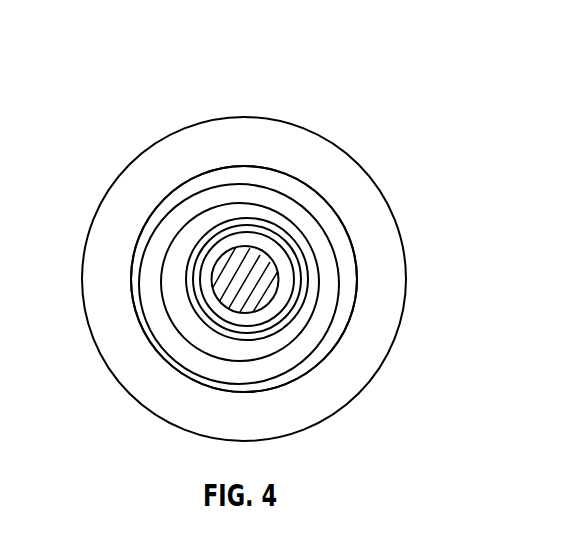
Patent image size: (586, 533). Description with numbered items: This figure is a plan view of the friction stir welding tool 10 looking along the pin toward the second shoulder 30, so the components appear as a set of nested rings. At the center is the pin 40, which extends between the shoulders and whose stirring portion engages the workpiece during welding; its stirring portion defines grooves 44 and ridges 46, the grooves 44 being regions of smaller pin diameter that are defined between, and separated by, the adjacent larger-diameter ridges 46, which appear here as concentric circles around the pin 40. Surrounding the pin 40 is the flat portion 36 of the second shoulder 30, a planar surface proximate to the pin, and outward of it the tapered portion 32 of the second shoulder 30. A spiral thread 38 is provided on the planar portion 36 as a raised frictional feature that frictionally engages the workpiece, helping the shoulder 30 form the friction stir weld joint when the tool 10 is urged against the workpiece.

The friction stir welding tool 10 is at (447, 100).
The second shoulder 30 is at (82, 305).
The tapered portion of the second shoulder 32 is at (122, 188).
The flat portion of the second shoulder 36 is at (196, 178).
The spiral thread 38 is at (242, 181).
The pin 40 is at (250, 297).
The groove 44 is at (280, 292).
The ridge 46 is at (295, 255).